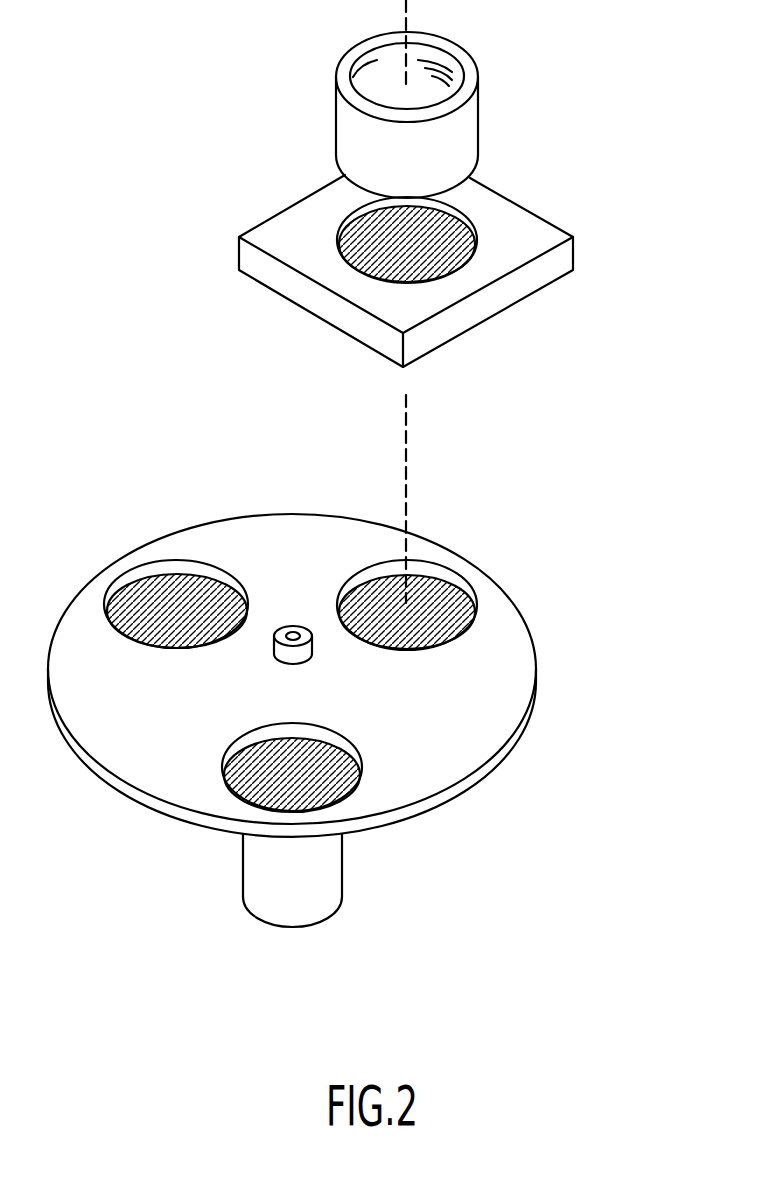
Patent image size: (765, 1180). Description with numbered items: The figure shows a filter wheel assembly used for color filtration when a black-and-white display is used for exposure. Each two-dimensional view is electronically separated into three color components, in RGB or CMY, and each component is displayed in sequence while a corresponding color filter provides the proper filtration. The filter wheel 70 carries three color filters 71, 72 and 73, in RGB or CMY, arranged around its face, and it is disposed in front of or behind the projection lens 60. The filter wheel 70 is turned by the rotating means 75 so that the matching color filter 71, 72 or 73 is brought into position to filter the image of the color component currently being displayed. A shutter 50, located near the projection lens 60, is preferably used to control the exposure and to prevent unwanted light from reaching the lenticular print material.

The shutter 50 is at (510, 223).
The projection lens 60 is at (345, 123).
The filter wheel 70 is at (510, 670).
The color filter 71 is at (163, 580).
The color filter 72 is at (447, 583).
The color filter 73 is at (318, 797).
The rotating means 75 is at (307, 913).